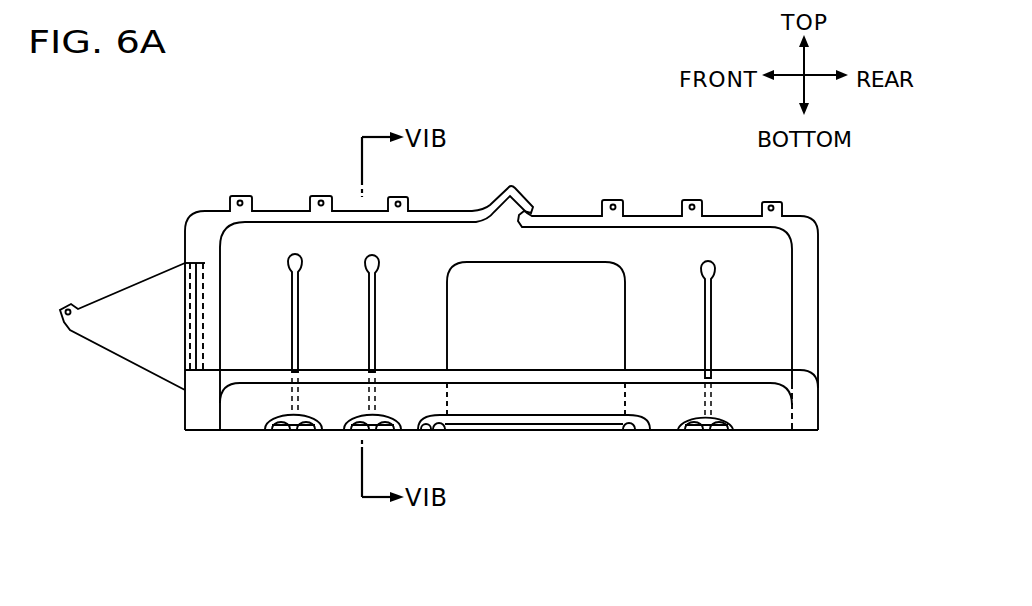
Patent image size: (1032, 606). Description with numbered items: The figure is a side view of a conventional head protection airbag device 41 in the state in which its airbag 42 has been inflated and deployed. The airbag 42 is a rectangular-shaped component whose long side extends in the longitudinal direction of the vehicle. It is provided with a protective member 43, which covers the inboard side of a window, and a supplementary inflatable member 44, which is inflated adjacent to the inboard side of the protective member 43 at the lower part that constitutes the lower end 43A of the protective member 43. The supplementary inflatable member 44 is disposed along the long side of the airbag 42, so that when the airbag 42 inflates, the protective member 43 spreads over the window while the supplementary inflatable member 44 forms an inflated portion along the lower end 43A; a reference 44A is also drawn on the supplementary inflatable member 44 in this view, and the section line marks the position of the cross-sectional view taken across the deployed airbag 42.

The head protection airbag device 41 is at (542, 158).
The airbag 42 is at (202, 222).
The protective member 43 is at (673, 243).
The lower end 43A is at (253, 433).
The supplementary inflatable member 44 is at (577, 407).
The rib contact surface 44A is at (513, 387).